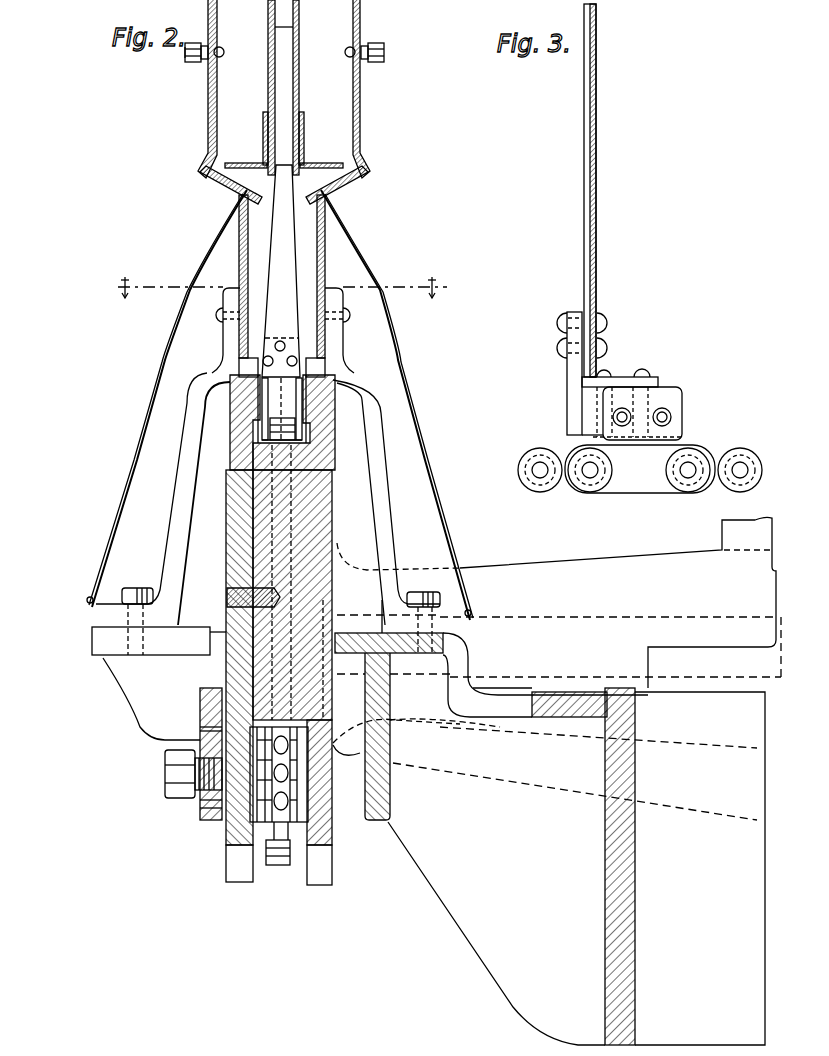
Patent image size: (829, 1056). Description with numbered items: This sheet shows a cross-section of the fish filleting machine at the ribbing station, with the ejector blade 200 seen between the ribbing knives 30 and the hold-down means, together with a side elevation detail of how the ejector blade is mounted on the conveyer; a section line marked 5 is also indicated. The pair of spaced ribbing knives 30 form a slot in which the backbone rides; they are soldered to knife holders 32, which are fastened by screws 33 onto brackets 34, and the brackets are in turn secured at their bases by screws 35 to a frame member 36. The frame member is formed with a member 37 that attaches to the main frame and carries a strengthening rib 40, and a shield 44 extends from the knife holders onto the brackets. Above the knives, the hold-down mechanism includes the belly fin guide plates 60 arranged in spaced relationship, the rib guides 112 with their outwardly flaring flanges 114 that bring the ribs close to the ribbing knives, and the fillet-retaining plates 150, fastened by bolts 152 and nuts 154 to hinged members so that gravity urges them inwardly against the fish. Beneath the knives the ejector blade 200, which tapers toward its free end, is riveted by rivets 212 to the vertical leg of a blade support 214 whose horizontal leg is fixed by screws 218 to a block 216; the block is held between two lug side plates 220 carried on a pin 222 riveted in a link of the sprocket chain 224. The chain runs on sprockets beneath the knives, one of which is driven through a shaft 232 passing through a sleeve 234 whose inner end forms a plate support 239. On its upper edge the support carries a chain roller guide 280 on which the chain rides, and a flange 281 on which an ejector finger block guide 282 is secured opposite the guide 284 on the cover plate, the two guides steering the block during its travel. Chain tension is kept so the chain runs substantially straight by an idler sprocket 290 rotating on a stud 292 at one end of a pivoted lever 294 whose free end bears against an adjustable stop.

In FIG. 2, the section line 5- 5 is at (277, 288).
In FIG. 2, the ribbing knives 30 is at (242, 197).
In FIG. 2, the knife holders 32 is at (239, 258).
In FIG. 2, the screws 33 is at (219, 318).
In FIG. 2, the brackets 34 is at (182, 442).
In FIG. 2, the screws 35 is at (137, 588).
In FIG. 2, the frame member 36 is at (99, 642).
In FIG. 2, the member 37 is at (630, 937).
In FIG. 2, the strengthening rib 40 is at (379, 822).
In FIG. 2, the shield 44 is at (143, 440).
In FIG. 2, the plates 60 is at (293, 83).
In FIG. 2, the rib guides 112 is at (264, 124).
In FIG. 2, the flange 114 is at (258, 163).
In FIG. 2, the plate 150 is at (211, 143).
In FIG. 2, the bolts 152 is at (224, 52).
In FIG. 2, the nuts 154 is at (198, 64).
In FIG. 2, the ejector blade 200 is at (290, 231).
In FIG. 3, the ejector blade 200 is at (592, 176).
In FIG. 3, the rivets 212 is at (564, 331).
In FIG. 3, the blade support 214 is at (618, 376).
In FIG. 2, the block 216 is at (262, 400).
In FIG. 3, the block 216 is at (571, 407).
In FIG. 3, the screws 218 is at (648, 373).
In FIG. 3, the lug side plates 220 is at (676, 405).
In FIG. 3, the pin 222 is at (690, 466).
In FIG. 2, the sprocket chain 224 is at (276, 866).
In FIG. 3, the sprocket chain 224 is at (766, 444).
In FIG. 2, the shaft 232 is at (554, 616).
In FIG. 2, the sleeve 234 is at (538, 553).
In FIG. 2, the plate support 239 is at (323, 527).
In FIG. 2, the chain roller guide 280 is at (284, 447).
In FIG. 2, the flange 281 is at (263, 421).
In FIG. 2, the ejector finger block guide 282 is at (334, 378).
In FIG. 2, the ejector finger block guide 284 is at (233, 380).
In FIG. 2, the idler sprocket 290 is at (268, 823).
In FIG. 2, the stud 292 is at (163, 775).
In FIG. 2, the lever 294 is at (200, 703).